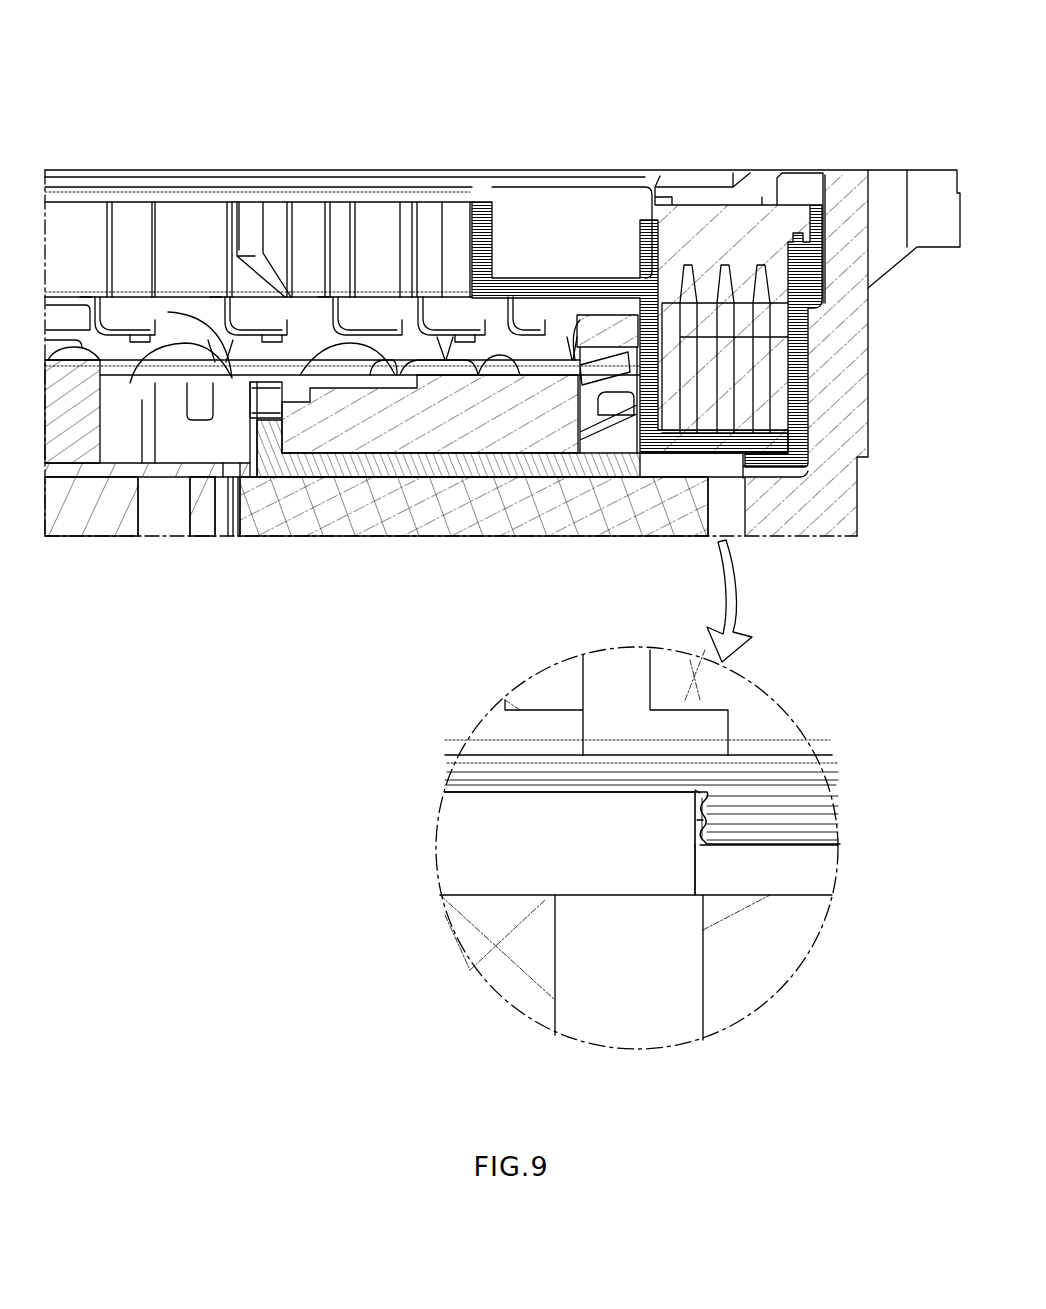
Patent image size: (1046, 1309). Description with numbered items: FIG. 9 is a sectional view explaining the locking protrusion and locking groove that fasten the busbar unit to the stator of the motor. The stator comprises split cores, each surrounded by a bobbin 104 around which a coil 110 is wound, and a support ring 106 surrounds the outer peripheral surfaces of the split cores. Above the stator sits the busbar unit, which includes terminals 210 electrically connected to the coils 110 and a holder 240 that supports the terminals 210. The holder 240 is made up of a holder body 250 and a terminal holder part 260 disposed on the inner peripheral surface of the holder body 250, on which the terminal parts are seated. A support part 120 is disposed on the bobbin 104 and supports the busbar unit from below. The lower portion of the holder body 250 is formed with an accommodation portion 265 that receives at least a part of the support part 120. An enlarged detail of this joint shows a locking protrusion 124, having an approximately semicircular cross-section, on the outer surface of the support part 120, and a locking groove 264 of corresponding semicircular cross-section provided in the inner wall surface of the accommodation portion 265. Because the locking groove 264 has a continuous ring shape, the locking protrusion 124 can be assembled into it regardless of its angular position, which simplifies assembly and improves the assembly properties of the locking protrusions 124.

The holder 240 is at (725, 52).
The terminal holder part 260 is at (577, 283).
The holder body 250 is at (798, 273).
The terminal 210 is at (768, 342).
The support ring 106 is at (833, 397).
The coil 110 is at (390, 437).
The bobbin 104 is at (492, 470).
The support part 120 is at (667, 467).
The accommodation portion 265 is at (578, 793).
The locking groove 264 is at (700, 820).
The locking protrusion 124 is at (697, 820).